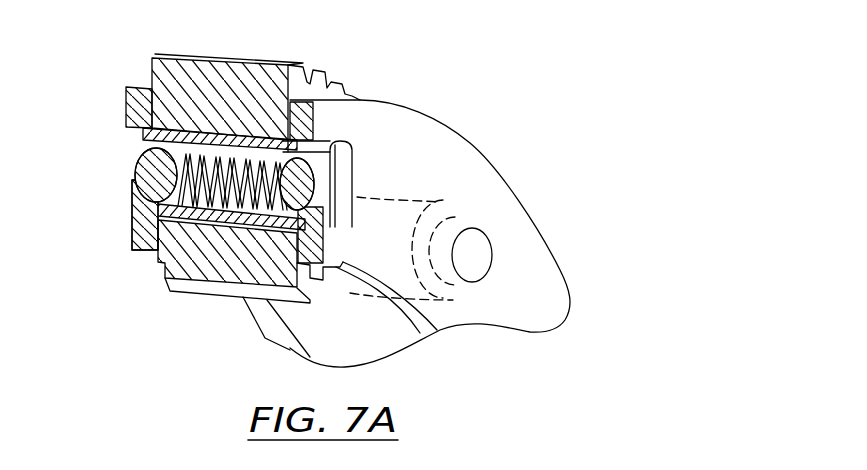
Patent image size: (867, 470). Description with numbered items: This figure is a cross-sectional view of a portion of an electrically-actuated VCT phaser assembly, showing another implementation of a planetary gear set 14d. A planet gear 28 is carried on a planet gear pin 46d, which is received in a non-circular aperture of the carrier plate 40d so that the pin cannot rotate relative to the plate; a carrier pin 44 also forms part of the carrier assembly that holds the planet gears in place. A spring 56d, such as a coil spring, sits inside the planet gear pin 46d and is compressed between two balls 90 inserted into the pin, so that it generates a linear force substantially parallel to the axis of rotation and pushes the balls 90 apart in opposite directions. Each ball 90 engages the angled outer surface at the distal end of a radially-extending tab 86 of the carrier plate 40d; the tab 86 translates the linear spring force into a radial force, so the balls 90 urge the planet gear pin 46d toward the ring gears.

The planetary gear set 14d is at (546, 134).
The planet gear 28 is at (236, 116).
The carrier plate 40d is at (399, 176).
The carrier pin 44 is at (478, 255).
The planet gear pin 46d is at (190, 122).
The spring 56d is at (220, 200).
The radially-extending tab 86 is at (124, 195).
The ball 90 is at (153, 168).